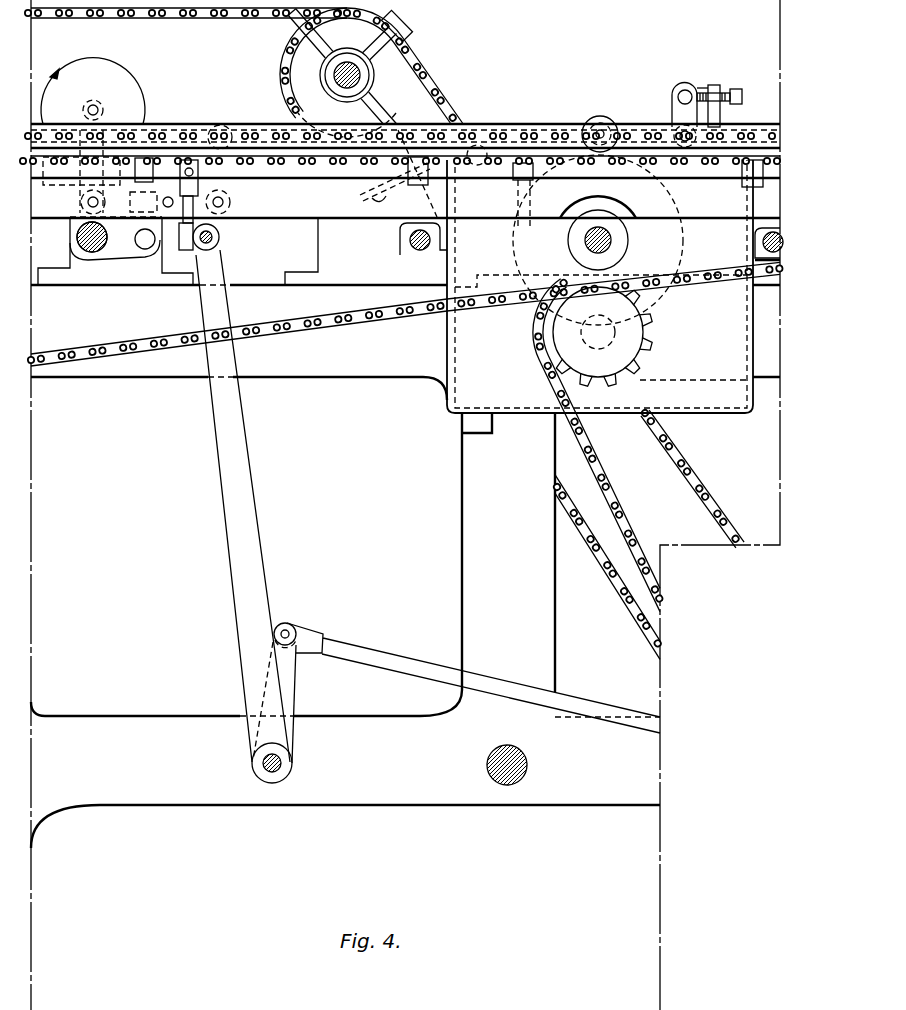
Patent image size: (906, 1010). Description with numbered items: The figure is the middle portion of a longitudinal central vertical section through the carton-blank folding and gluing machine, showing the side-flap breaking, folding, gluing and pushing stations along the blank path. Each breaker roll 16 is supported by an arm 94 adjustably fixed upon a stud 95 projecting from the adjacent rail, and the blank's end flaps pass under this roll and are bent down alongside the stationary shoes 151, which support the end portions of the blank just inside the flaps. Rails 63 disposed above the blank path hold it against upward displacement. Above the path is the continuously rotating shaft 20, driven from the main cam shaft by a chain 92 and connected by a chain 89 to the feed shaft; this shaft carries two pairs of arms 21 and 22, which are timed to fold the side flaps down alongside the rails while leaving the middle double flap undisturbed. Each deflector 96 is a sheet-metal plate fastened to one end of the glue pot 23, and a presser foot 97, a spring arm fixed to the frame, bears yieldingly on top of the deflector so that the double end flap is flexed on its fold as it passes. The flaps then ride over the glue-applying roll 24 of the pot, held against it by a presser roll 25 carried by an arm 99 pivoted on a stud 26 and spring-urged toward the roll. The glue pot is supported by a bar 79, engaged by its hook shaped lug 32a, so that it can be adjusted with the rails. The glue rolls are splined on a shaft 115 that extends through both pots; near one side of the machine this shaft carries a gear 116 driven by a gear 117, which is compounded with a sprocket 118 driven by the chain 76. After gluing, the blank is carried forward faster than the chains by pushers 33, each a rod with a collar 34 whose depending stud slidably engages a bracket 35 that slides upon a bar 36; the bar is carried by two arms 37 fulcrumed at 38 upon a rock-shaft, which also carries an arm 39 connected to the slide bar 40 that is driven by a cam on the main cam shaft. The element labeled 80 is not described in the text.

The breaker roll 16 is at (128, 63).
The arm 94 is at (80, 106).
The chain 89 is at (283, 22).
The arms 21 is at (287, 37).
The arms 22 is at (409, 27).
The shaft 20 is at (360, 78).
The chain 92 is at (450, 110).
The presser foot 97 is at (166, 205).
The rails 63 is at (525, 127).
The presser roll 25 is at (594, 127).
The arm 99 is at (630, 128).
The stud 26 is at (692, 137).
The stationary shoes 151 is at (80, 184).
The pushers 33 is at (295, 172).
The collar 34 is at (190, 182).
The glue-applying roll 24 is at (520, 267).
The stud 95 is at (82, 207).
The bracket arm 80 is at (145, 249).
The bar 79 is at (97, 252).
The bracket 35 is at (210, 227).
The bar 36 is at (218, 240).
The arms 37 is at (230, 308).
The hook shaped lug 32a is at (410, 233).
The deflector 96 is at (395, 189).
The glue pot 23 is at (600, 286).
The gear 116 is at (553, 215).
The shaft 115 is at (612, 240).
The gear 117 is at (643, 313).
The sprocket 118 is at (660, 345).
The chain 76 is at (622, 502).
The slide bar 40 is at (380, 655).
The arm 39 is at (297, 690).
The fulcrum 38 is at (260, 763).